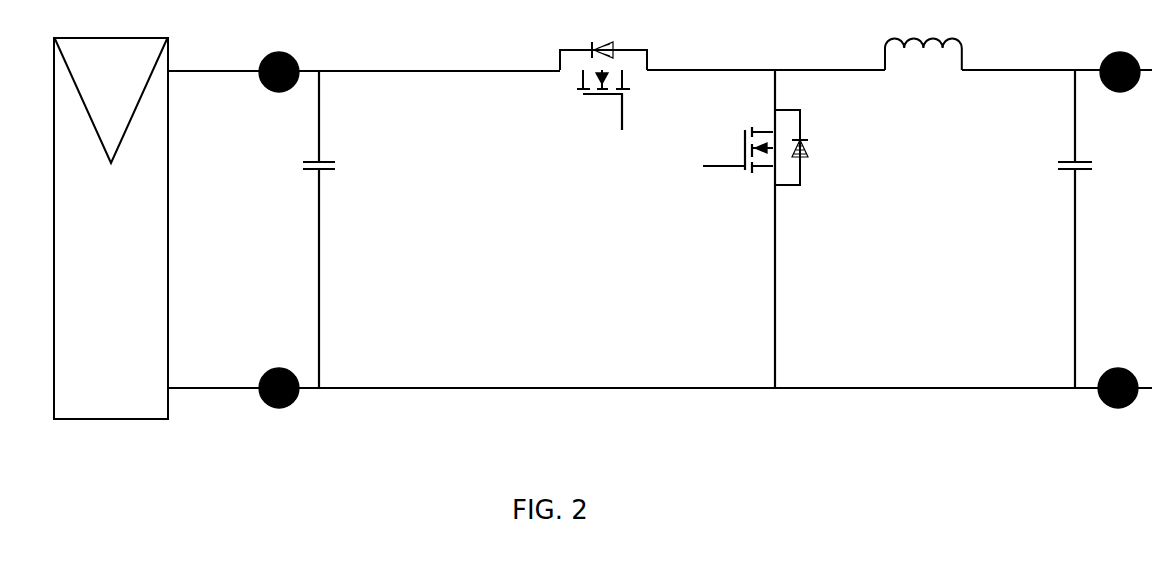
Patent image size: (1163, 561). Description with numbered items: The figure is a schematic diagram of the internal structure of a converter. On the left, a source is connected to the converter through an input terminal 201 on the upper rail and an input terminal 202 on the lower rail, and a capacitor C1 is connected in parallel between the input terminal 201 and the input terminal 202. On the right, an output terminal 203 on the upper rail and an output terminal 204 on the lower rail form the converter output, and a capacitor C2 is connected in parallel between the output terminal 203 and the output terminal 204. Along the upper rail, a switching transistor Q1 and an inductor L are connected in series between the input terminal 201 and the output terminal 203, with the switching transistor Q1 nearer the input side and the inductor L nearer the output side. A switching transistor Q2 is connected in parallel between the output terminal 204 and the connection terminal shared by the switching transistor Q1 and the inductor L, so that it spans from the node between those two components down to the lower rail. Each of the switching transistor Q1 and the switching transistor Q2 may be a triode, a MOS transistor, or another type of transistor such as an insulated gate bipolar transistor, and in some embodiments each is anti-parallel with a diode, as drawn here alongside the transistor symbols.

The input terminal 201 is at (279, 59).
The input terminal 202 is at (279, 408).
The output terminal 203 is at (1120, 59).
The output terminal 204 is at (1118, 405).
The capacitor C1 is at (337, 229).
The capacitor C2 is at (1093, 229).
The switching transistor Q1 is at (618, 88).
The switching transistor Q2 is at (754, 229).
The inductor L is at (923, 37).